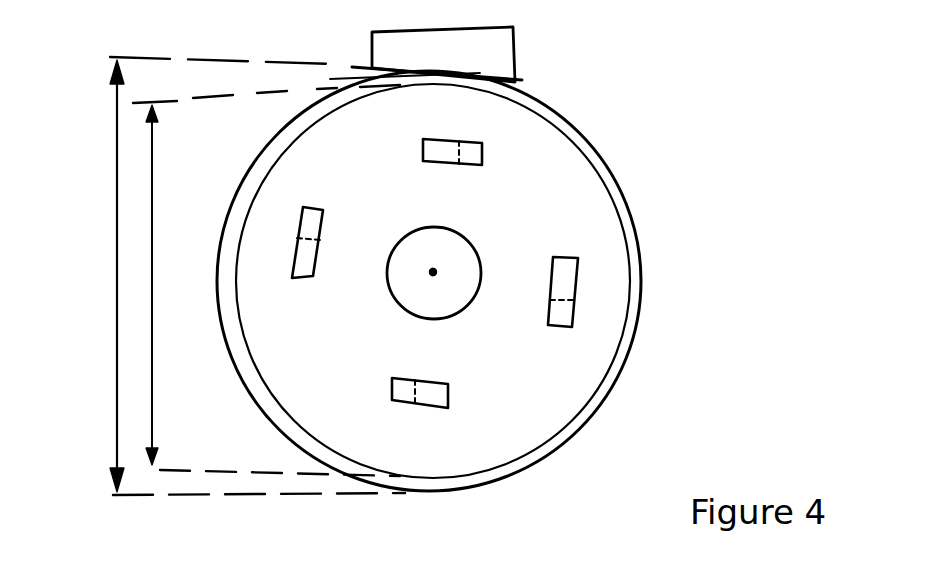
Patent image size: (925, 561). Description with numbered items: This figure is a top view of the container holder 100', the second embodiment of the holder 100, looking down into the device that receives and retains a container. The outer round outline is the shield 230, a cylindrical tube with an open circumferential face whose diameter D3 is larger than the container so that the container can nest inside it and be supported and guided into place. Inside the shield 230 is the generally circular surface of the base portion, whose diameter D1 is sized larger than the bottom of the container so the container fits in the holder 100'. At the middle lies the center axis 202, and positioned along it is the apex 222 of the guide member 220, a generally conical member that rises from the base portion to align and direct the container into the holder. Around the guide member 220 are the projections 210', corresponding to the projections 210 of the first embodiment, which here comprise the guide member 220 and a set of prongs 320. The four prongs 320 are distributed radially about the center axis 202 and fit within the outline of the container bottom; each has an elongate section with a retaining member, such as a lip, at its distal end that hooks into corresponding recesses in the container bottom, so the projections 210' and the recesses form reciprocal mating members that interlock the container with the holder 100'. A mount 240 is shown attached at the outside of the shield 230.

The container holder 100' is at (506, 259).
The holder 100 is at (506, 259).
The center axis 202 is at (442, 266).
The apex 222 is at (433, 272).
The projections 210' is at (487, 283).
The projections 210 is at (487, 283).
The guide member 220 is at (488, 298).
The shield 230 is at (606, 168).
The mount 240 is at (495, 57).
The prongs 320 is at (410, 149).
The diameter D1 is at (266, 280).
The diameter D3 is at (116, 250).